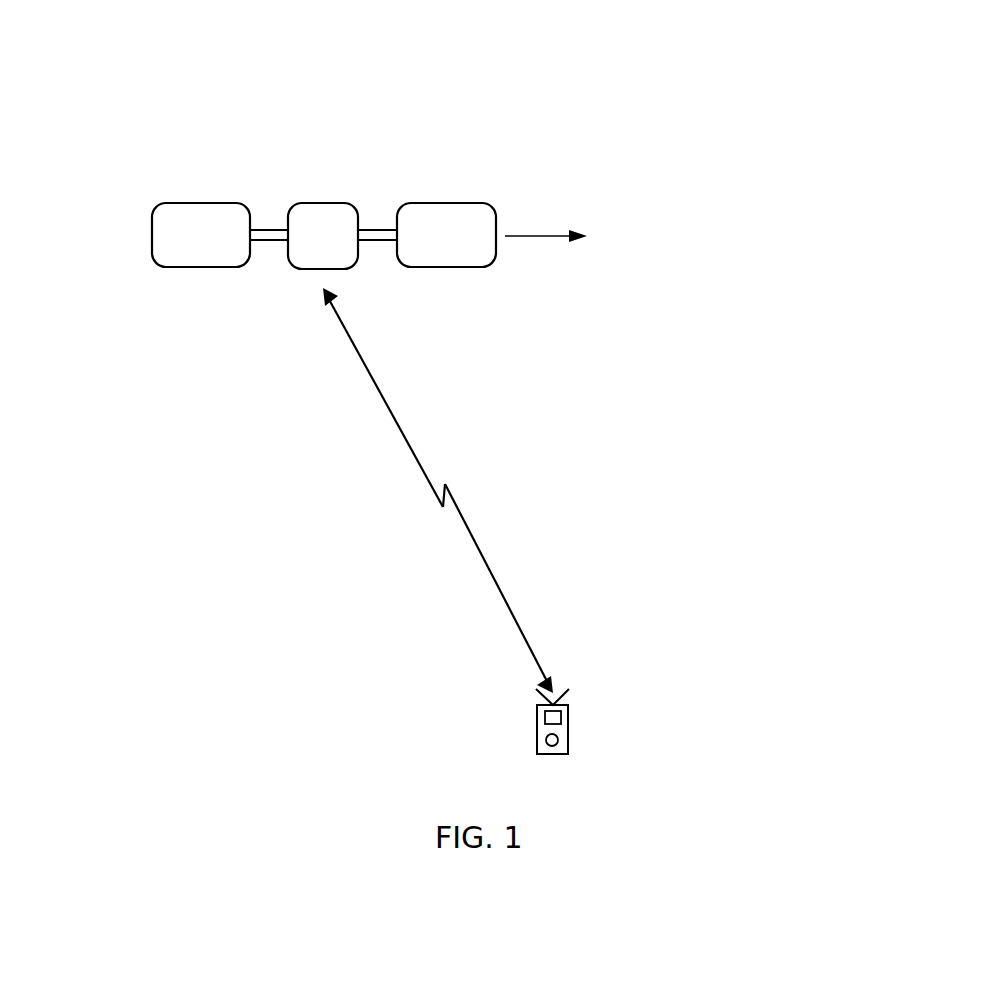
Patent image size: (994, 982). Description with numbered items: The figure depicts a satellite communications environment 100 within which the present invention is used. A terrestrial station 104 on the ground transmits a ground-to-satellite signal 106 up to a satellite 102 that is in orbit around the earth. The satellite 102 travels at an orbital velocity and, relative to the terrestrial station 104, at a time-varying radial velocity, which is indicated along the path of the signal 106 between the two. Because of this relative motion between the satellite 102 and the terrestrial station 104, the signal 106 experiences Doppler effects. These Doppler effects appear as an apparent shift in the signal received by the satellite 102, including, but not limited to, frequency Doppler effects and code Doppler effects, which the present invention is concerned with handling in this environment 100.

The satellite communications environment 100 is at (109, 45).
The satellite 102 is at (318, 203).
The terrestrial station 104 is at (546, 755).
The ground-to-satellite signal 106 is at (398, 417).